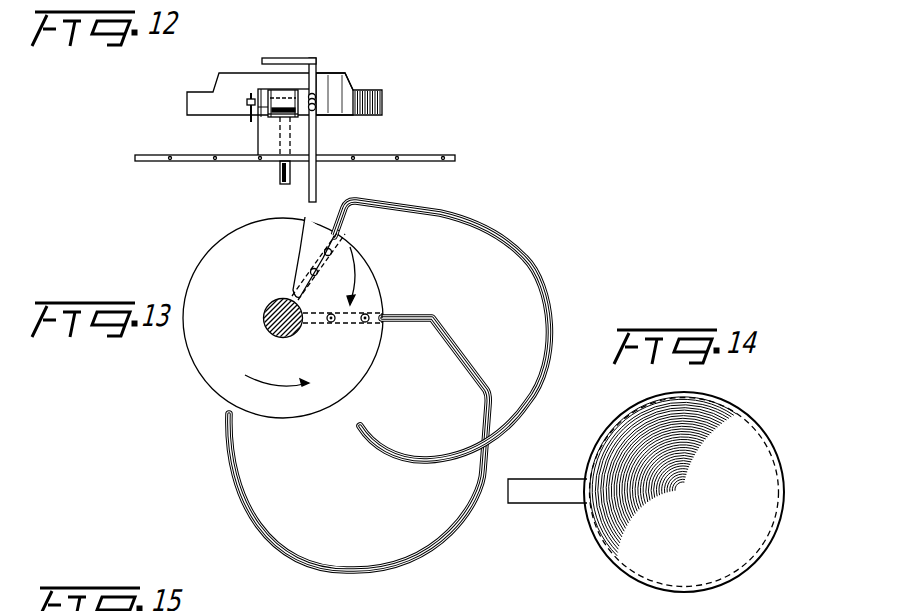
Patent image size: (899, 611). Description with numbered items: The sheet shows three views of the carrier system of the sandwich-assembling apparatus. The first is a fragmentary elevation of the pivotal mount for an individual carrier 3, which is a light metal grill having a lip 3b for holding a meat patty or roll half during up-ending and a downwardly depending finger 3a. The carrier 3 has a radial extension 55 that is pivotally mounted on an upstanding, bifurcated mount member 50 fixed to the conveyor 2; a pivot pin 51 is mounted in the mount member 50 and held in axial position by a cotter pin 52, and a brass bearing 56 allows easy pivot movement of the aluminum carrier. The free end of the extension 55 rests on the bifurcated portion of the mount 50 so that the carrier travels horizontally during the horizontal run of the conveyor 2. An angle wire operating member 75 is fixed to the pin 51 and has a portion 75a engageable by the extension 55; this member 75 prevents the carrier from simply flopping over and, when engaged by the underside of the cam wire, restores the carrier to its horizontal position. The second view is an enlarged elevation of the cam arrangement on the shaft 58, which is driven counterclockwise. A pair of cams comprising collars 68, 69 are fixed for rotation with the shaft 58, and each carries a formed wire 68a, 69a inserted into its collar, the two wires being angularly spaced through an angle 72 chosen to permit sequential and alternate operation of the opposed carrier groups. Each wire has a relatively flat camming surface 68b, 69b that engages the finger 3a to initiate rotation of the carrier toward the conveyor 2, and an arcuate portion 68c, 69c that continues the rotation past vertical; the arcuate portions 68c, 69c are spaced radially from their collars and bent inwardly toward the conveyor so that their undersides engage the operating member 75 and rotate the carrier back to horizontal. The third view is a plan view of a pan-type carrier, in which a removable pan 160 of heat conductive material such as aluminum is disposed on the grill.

In FIG. 12, the conveyor 2 is at (413, 156).
In FIG. 12, the carrier 3 is at (353, 87).
In FIG. 12, the finger 3a is at (285, 186).
In FIG. 12, the lip 3b is at (343, 77).
In FIG. 12, the bifurcated mount member 50 is at (263, 130).
In FIG. 12, the pivot pin 51 is at (315, 104).
In FIG. 12, the cotter pin 52 is at (250, 113).
In FIG. 14, the radial extension 55 is at (573, 503).
In FIG. 12, the brass bearing 56 is at (292, 95).
In FIG. 13, the shaft 58 is at (264, 318).
In FIG. 13, the collar 68 is at (326, 263).
In FIG. 13, the formed wire 68a is at (541, 268).
In FIG. 13, the camming surface 68b is at (472, 237).
In FIG. 13, the arcuate portion 68c is at (534, 372).
In FIG. 13, the collar 69 is at (203, 357).
In FIG. 13, the formed wire 69a is at (460, 513).
In FIG. 13, the camming surface 69b is at (467, 357).
In FIG. 13, the arcuate portion 69c is at (353, 558).
In FIG. 13, the angle 72 is at (345, 283).
In FIG. 12, the angle wire operating member 75 is at (317, 173).
In FIG. 12, the portion 75a is at (294, 58).
In FIG. 14, the removable pan 160 is at (636, 549).